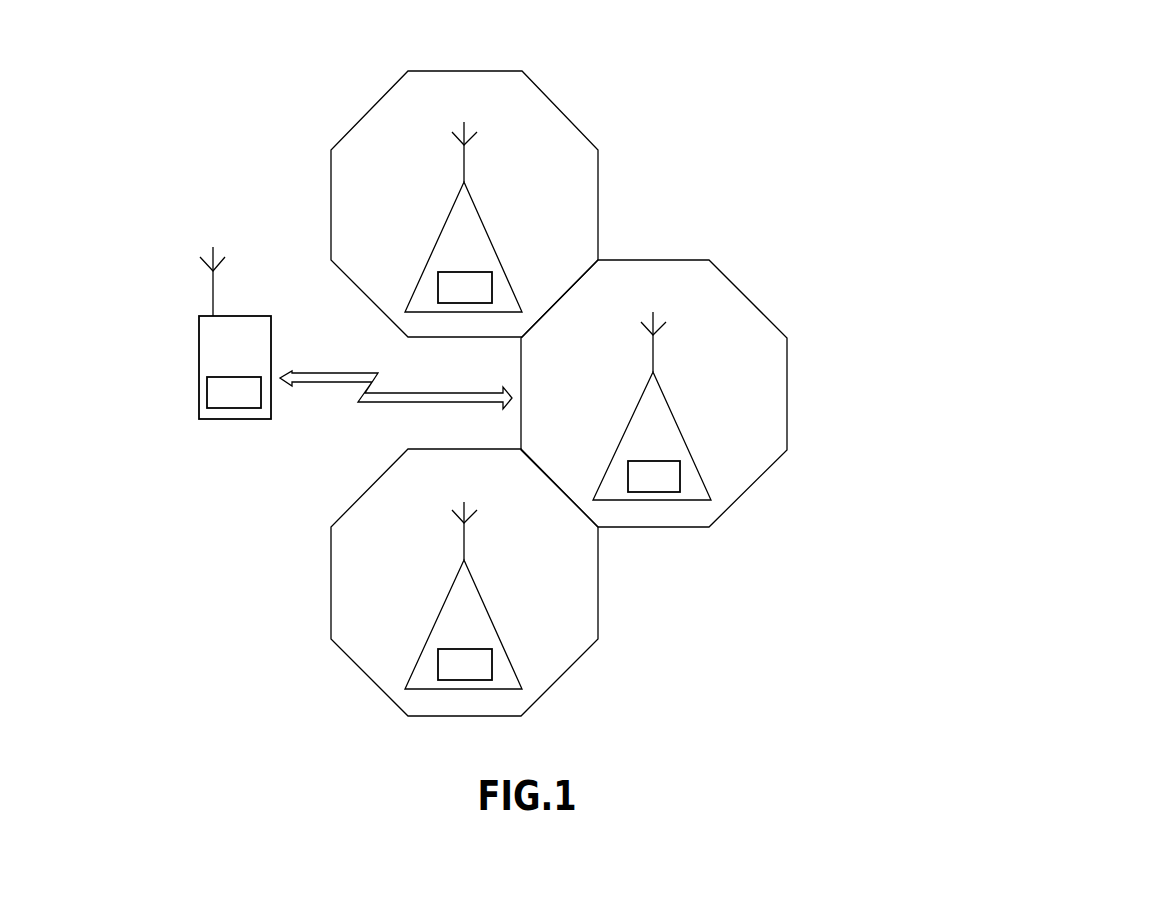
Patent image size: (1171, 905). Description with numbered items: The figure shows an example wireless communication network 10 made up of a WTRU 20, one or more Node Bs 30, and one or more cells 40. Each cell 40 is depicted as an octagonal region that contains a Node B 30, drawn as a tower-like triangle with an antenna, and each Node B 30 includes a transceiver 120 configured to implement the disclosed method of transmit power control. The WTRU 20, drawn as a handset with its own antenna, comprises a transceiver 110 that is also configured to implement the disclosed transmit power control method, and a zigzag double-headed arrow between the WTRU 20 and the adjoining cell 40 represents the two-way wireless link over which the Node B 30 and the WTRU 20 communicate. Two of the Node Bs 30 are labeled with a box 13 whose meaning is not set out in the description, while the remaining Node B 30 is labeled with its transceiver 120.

The wireless communication network 10 is at (1093, 59).
The WTRU 20 is at (355, 333).
The transceiver 110 is at (234, 392).
The Node B 30 is at (558, 435).
The cell 40 is at (537, 341).
The base station processing unit 13 is at (559, 382).
The transceiver 120 is at (465, 664).